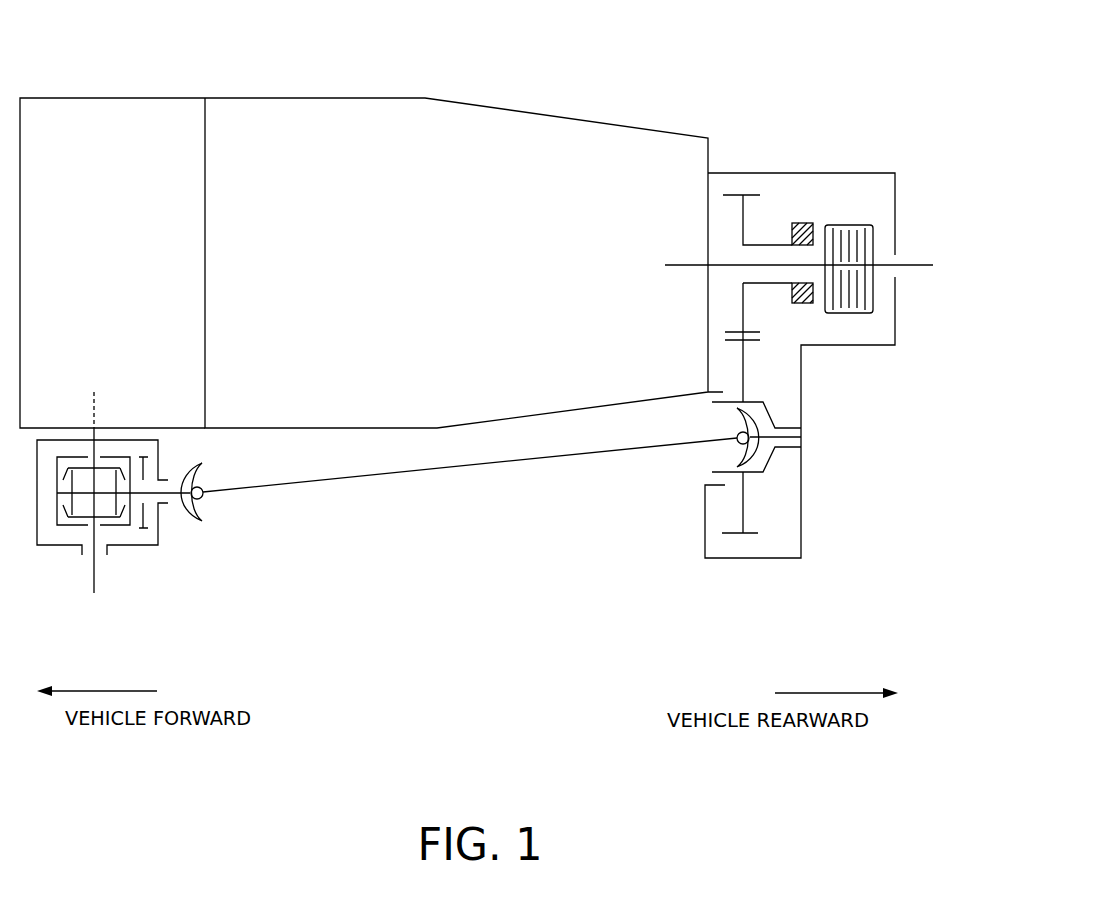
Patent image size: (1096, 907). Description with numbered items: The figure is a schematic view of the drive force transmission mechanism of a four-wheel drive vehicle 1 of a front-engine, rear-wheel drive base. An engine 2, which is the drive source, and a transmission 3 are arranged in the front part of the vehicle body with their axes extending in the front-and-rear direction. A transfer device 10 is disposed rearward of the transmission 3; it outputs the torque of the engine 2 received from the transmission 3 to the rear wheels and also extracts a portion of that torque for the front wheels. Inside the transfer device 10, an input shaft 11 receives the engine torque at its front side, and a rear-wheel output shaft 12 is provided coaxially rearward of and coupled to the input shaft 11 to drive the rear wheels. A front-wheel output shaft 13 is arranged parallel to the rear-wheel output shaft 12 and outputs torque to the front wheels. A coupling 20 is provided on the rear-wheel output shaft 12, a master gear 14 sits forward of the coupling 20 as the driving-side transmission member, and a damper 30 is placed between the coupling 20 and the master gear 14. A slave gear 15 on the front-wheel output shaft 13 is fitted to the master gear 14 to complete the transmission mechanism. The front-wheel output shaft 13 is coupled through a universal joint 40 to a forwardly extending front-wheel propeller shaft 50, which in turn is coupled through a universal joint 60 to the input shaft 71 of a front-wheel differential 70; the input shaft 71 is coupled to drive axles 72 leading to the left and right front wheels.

The four-wheel drive vehicle 1 is at (714, 41).
The engine 2 is at (105, 96).
The transmission 3 is at (540, 113).
The transfer device 10 is at (849, 169).
The input shaft 11 is at (734, 267).
The rear-wheel output shaft 12 is at (912, 256).
The front-wheel output shaft 13 is at (793, 428).
The master gear 14 is at (734, 200).
The slave gear 15 is at (745, 531).
The coupling 20 is at (845, 221).
The damper 30 is at (800, 309).
The universal joint 40 is at (728, 451).
The front-wheel propeller shaft 50 is at (372, 477).
The universal joint 60 is at (205, 525).
The front-wheel differential 70 is at (128, 553).
The input shaft 71 is at (178, 500).
The drive axles 72 is at (92, 401).